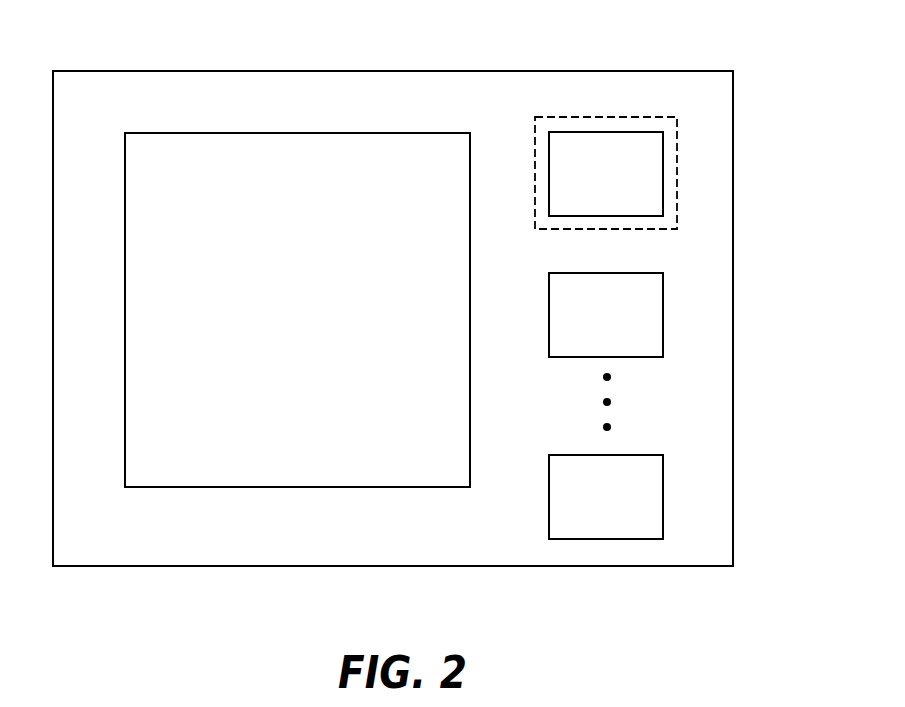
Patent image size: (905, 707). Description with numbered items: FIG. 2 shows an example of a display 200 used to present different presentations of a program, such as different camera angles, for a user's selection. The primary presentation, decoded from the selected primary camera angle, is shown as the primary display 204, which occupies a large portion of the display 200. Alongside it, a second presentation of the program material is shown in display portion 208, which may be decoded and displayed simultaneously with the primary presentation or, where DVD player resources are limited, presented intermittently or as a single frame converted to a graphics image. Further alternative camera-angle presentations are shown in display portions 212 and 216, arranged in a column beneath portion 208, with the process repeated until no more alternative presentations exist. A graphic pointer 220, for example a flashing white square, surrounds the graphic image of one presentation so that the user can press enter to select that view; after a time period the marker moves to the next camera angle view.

The display 200 is at (478, 72).
The primary display 204 is at (226, 487).
The display portion for second presentation 208 is at (663, 145).
The display portion for alternative presentation 212 is at (663, 312).
The display portion for alternative presentation 216 is at (663, 495).
The graphic pointer 220 is at (677, 180).